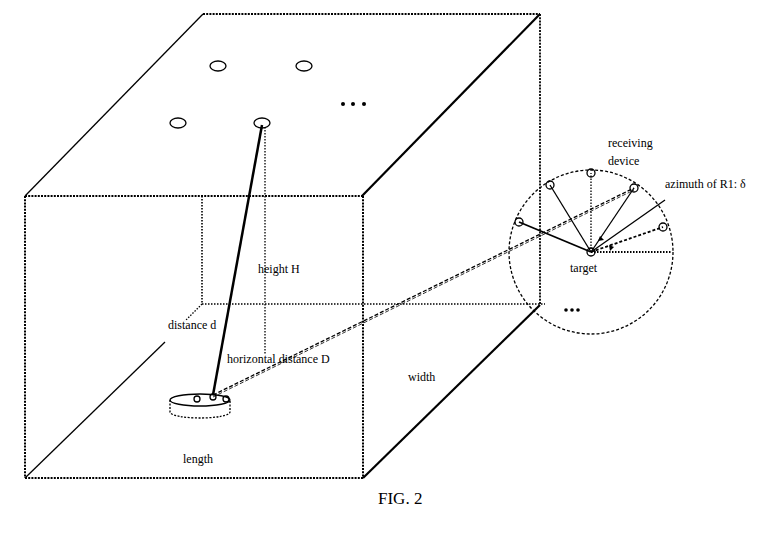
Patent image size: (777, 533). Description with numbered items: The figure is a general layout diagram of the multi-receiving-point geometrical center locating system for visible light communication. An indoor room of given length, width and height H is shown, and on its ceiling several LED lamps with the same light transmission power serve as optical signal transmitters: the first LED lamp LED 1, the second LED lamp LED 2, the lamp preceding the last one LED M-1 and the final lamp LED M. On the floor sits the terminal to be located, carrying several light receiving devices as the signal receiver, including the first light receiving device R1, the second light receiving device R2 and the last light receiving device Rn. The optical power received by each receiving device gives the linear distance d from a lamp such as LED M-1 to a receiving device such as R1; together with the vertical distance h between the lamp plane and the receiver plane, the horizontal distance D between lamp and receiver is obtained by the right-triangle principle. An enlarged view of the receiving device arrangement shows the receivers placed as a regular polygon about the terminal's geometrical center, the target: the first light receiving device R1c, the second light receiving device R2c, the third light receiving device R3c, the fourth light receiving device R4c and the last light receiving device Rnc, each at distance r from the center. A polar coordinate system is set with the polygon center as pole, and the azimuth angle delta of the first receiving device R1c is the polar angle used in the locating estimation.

The first LED lamp LED 1 is at (226, 76).
The second LED lamp LED 2 is at (316, 76).
The Mth LED lamp LED M is at (190, 131).
The (M-1)th LED lamp LED M-1 is at (287, 131).
The first light receiving device R1 is at (206, 389).
The second light receiving device R2 is at (196, 397).
The Nth light receiving device Rn is at (234, 394).
The first light receiving device R1c is at (624, 212).
The second light receiving device R2c is at (590, 166).
The third light receiving device R3c is at (562, 210).
The fourth light receiving device R4c is at (544, 233).
The Nth light receiving device Rnc is at (640, 236).